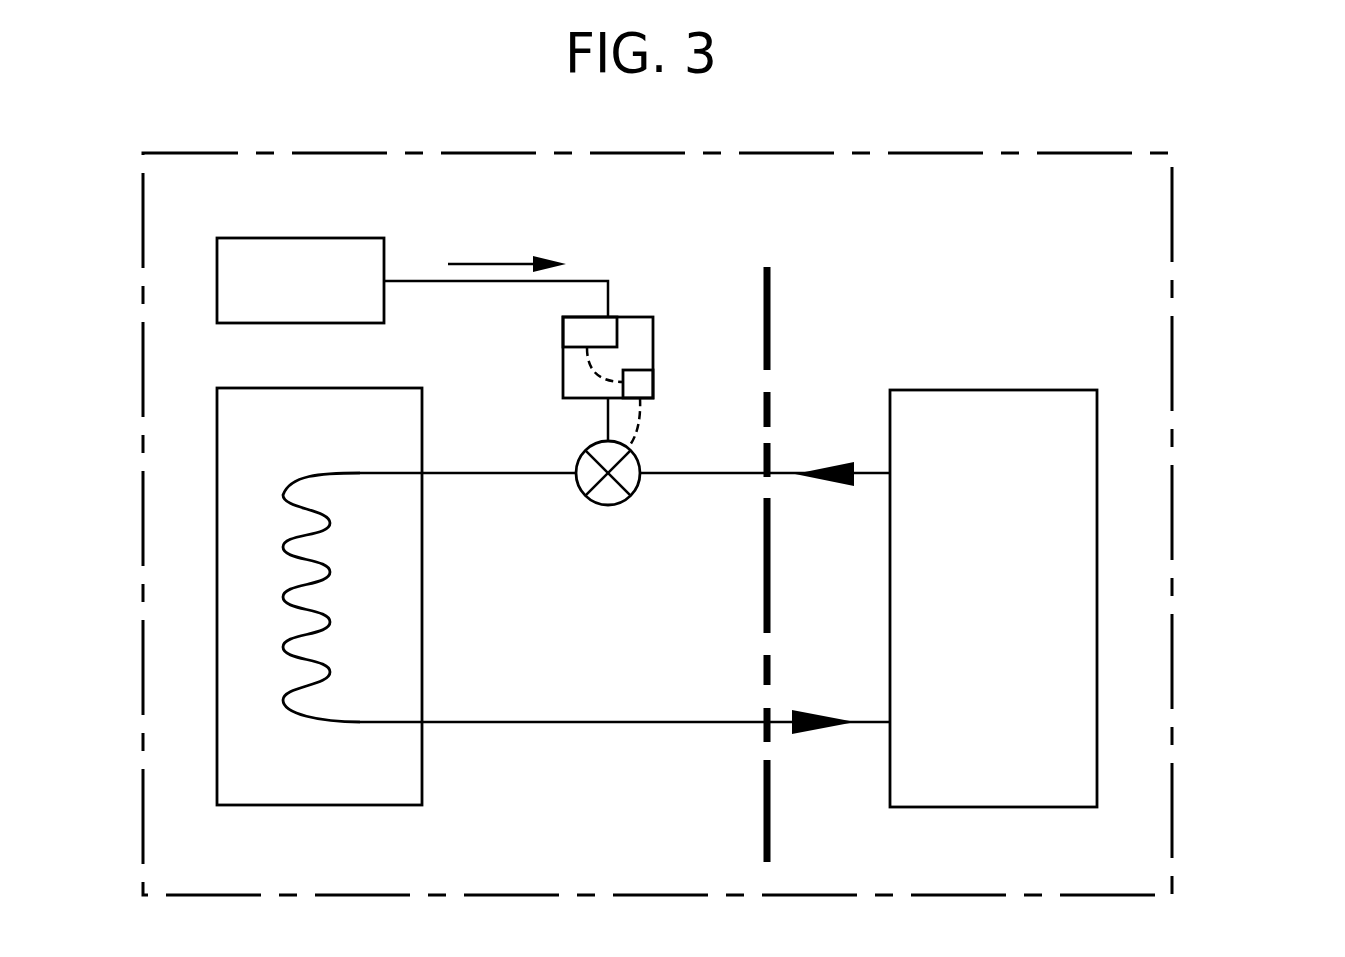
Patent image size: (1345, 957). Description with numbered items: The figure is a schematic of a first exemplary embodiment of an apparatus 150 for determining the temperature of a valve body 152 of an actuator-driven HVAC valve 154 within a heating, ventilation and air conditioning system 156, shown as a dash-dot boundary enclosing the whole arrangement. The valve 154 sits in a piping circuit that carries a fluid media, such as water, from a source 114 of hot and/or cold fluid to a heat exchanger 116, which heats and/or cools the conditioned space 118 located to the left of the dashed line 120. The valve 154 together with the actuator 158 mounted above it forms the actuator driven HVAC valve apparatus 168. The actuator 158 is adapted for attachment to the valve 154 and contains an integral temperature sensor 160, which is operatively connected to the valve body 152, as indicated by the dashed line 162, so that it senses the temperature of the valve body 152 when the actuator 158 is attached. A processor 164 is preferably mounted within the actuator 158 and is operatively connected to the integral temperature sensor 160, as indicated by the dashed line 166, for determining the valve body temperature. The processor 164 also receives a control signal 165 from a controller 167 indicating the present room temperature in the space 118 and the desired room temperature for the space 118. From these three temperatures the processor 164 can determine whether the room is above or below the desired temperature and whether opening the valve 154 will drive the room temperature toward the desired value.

The apparatus 150 is at (737, 514).
The HVAC system 156 is at (1172, 268).
The controller 167 is at (334, 295).
The control signal 165 is at (498, 261).
The actuator driven HVAC valve apparatus 168 is at (628, 327).
The actuator 158 is at (635, 347).
The processor 164 is at (568, 330).
The integral temperature sensor 160 is at (645, 387).
The dashed line 166 is at (593, 368).
The dashed line 162 is at (637, 433).
The valve body 152 is at (618, 503).
The actuator-driven HVAC valve 154 is at (652, 498).
The heat exchanger 116 is at (349, 780).
The source 114 is at (1020, 782).
The conditioned space 118 is at (573, 832).
The dashed line 120 is at (765, 811).